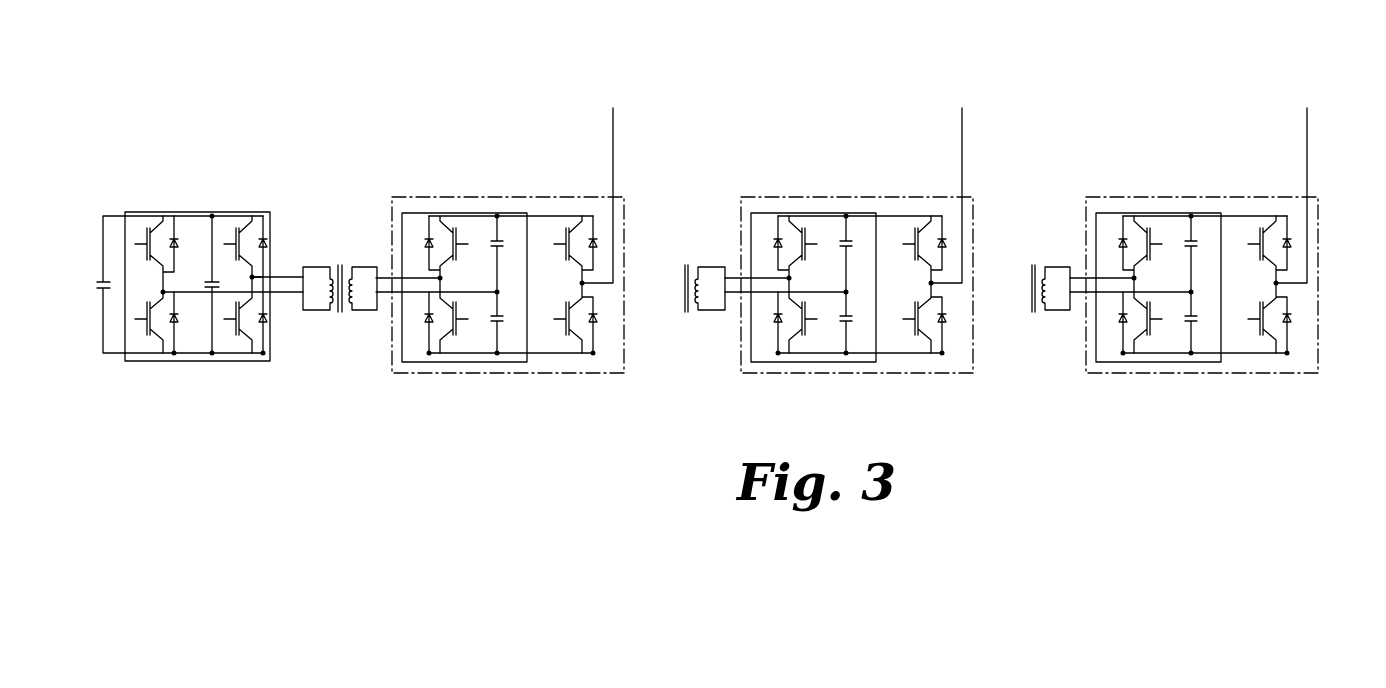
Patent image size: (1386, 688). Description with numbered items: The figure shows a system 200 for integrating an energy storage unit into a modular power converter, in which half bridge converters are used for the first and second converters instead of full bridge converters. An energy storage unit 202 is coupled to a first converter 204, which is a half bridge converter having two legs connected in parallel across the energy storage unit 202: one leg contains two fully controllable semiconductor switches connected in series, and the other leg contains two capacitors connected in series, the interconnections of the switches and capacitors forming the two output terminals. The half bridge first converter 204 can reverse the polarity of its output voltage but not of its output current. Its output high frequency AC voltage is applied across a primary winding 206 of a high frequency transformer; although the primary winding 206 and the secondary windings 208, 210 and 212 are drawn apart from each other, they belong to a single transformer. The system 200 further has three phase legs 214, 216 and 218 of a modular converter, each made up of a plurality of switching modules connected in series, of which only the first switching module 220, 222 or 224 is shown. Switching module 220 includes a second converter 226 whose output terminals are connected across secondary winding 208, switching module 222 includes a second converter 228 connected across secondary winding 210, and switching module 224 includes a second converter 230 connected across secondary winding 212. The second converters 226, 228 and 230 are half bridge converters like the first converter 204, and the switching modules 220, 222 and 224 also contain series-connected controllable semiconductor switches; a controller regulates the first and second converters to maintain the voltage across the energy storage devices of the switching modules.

The system 200 is at (206, 70).
The energy storage unit 202 is at (99, 290).
The first converter 204 is at (198, 212).
The primary winding 206 is at (331, 305).
The secondary winding 208 is at (346, 268).
The secondary winding 210 is at (697, 275).
The secondary winding 212 is at (1044, 273).
The phase leg 214 is at (613, 130).
The phase leg 216 is at (962, 130).
The phase leg 218 is at (1307, 130).
The first switching module 220 is at (458, 197).
The first switching module 222 is at (807, 197).
The first switching module 224 is at (1152, 197).
The second converter 226 is at (453, 362).
The second converter 228 is at (802, 362).
The second converter 230 is at (1147, 362).